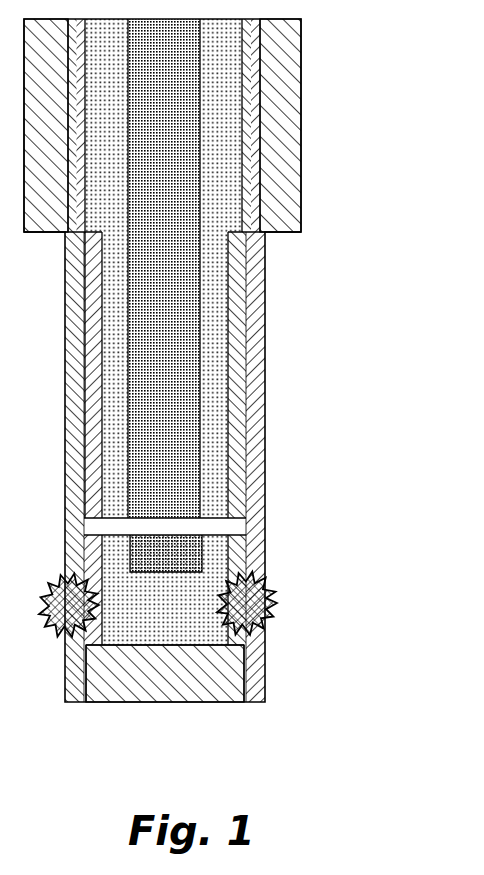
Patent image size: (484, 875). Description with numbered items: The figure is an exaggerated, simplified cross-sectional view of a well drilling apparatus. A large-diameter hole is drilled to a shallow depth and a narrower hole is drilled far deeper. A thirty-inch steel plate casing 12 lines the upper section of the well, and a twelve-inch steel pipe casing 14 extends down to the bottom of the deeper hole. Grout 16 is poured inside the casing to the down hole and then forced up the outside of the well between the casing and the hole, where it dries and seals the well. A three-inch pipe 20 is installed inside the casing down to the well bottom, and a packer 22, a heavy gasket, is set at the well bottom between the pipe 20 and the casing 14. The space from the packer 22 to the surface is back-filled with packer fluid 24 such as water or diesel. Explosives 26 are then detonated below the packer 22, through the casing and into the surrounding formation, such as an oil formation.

The casing 12 is at (262, 134).
The casing 14 is at (265, 248).
The grout 16 is at (310, 68).
The pipe 20 is at (200, 359).
The packer 22 is at (237, 531).
The packer fluid 24 is at (213, 435).
The explosives 26 is at (272, 611).